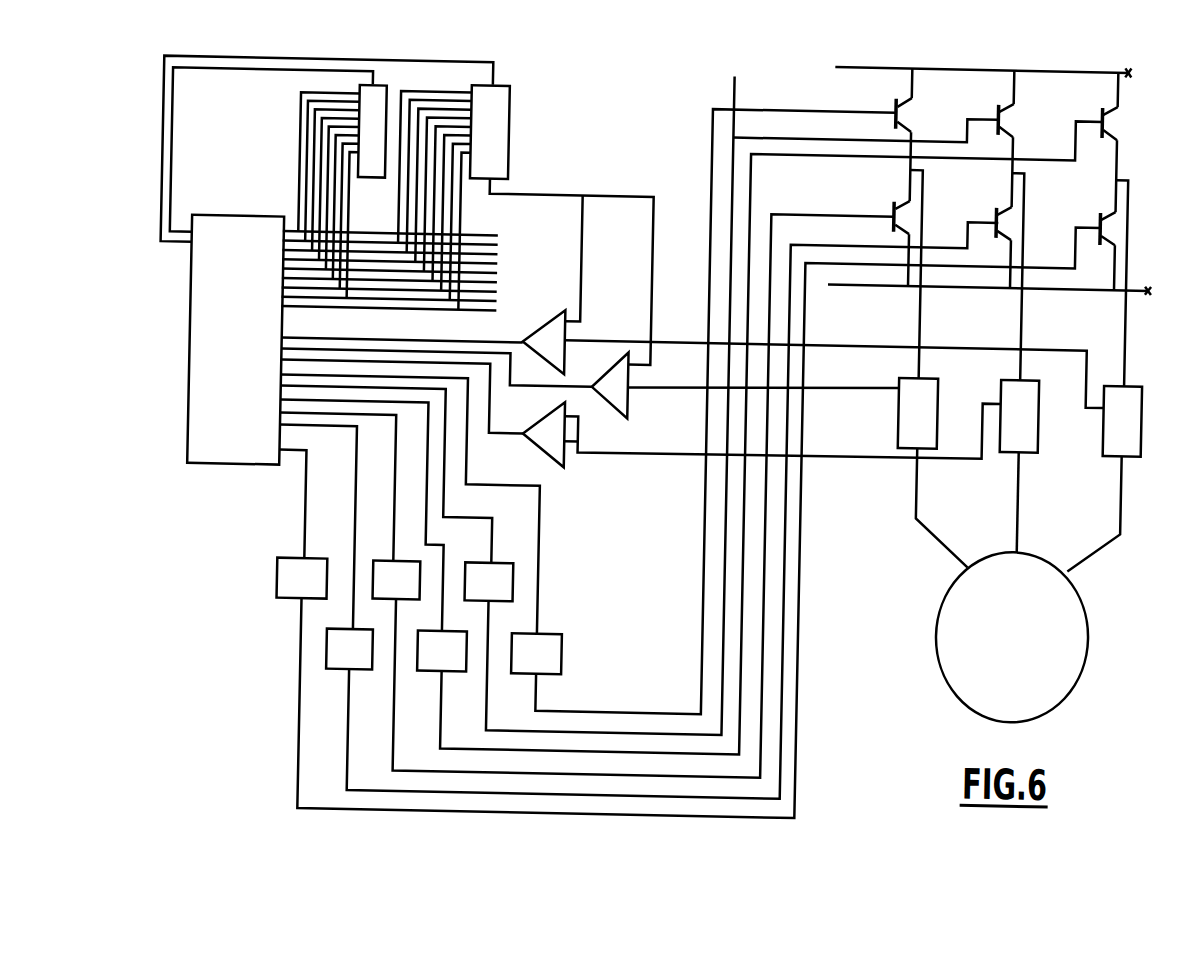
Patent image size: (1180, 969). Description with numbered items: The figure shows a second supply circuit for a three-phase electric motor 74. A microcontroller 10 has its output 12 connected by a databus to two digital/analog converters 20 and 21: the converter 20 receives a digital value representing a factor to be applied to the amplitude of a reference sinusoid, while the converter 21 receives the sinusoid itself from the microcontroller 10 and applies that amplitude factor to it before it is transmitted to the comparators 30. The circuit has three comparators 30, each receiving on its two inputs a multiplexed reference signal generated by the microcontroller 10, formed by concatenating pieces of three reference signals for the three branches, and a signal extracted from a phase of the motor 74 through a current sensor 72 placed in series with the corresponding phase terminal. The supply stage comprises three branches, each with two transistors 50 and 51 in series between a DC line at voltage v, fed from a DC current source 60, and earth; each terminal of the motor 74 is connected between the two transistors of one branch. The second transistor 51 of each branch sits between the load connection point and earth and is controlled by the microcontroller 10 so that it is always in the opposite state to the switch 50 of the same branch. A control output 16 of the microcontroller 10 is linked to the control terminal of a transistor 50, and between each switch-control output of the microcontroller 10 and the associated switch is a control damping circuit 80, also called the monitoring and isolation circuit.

The microcontroller 10 is at (233, 437).
The output 12 is at (289, 219).
The control output 16 is at (727, 74).
The digital/analog converter 20 is at (510, 65).
The digital/analog converter 21 is at (494, 127).
The comparator 30 is at (585, 380).
The transistor 50 is at (1097, 103).
The second transistor 51 is at (1096, 222).
The DC current source 60 is at (868, 60).
The current sensor 72 is at (1100, 442).
The three-phase electric motor 74 is at (966, 630).
The control damping circuit 80 is at (393, 562).